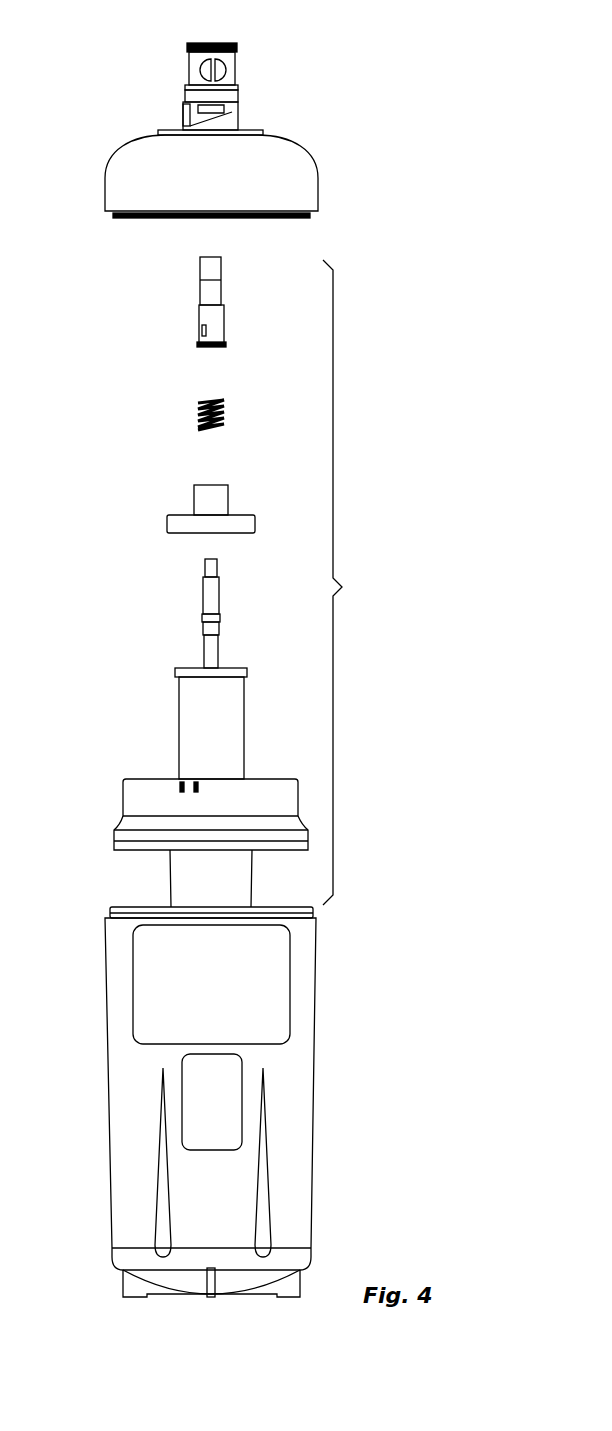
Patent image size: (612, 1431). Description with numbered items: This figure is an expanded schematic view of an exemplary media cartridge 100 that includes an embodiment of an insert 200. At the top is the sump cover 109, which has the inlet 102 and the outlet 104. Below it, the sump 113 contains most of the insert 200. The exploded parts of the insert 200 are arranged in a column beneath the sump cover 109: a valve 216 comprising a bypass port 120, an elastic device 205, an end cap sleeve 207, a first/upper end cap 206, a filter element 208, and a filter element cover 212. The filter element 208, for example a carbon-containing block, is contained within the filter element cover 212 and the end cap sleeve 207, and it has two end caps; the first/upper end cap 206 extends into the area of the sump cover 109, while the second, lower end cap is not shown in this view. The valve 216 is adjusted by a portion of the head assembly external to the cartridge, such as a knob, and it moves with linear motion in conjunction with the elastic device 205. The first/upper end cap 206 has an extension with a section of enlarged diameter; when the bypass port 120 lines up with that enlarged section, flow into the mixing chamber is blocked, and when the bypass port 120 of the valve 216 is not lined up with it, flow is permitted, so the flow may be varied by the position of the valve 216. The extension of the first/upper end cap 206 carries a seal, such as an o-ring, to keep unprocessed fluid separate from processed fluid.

The media cartridge 100 is at (367, 95).
The inlet 102 is at (220, 72).
The outlet 104 is at (217, 43).
The sump cover 109 is at (302, 163).
The sump 113 is at (118, 993).
The bypass port 120 is at (201, 329).
The insert 200 is at (355, 582).
The elastic device 205 is at (226, 410).
The first/upper end cap 206 is at (210, 648).
The end cap sleeve 207 is at (221, 498).
The filter element 208 is at (185, 722).
The filter element cover 212 is at (128, 793).
The valve 216 is at (207, 289).